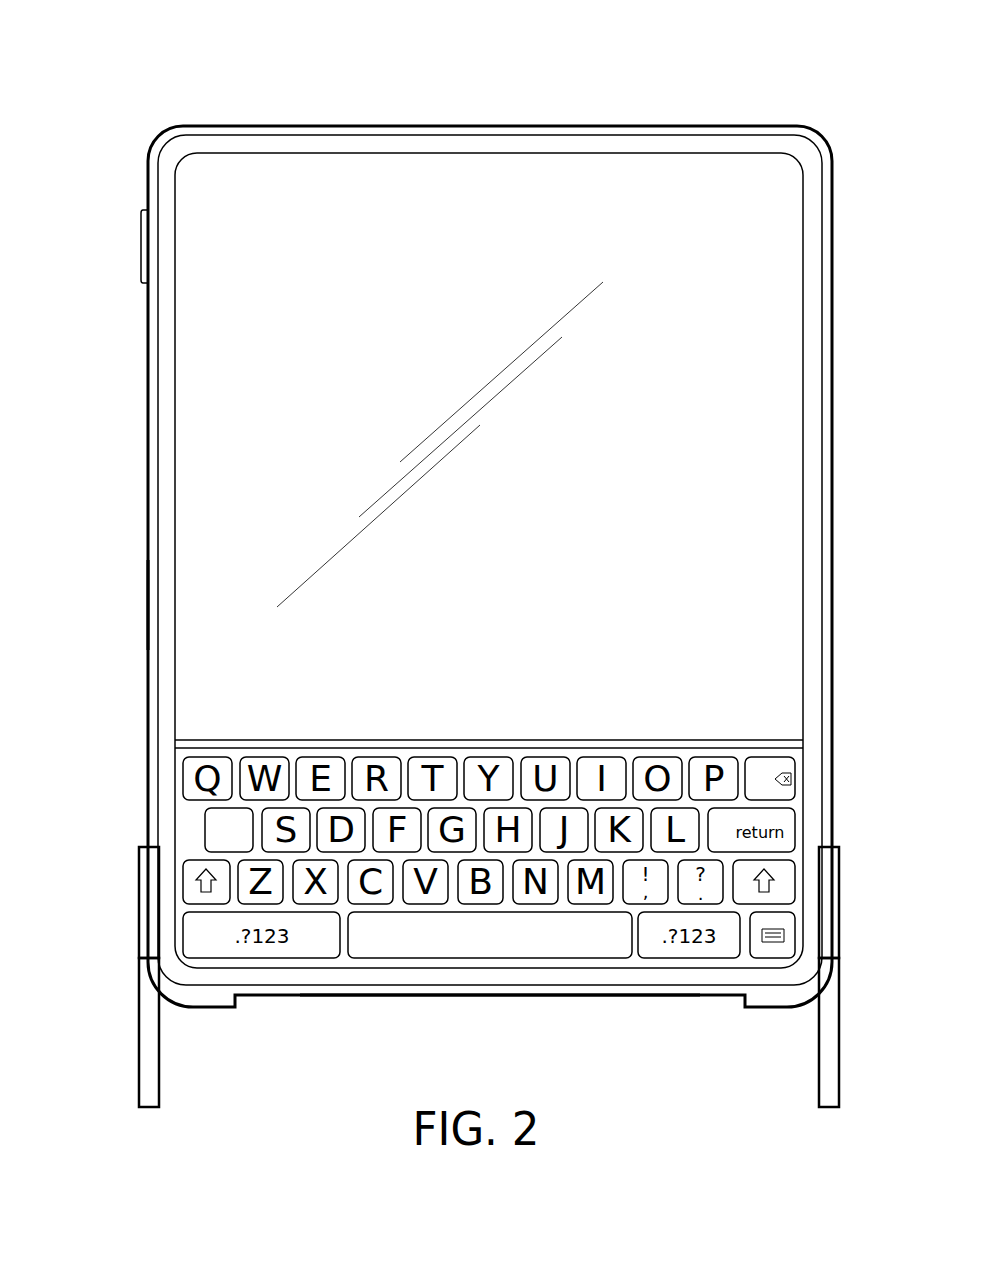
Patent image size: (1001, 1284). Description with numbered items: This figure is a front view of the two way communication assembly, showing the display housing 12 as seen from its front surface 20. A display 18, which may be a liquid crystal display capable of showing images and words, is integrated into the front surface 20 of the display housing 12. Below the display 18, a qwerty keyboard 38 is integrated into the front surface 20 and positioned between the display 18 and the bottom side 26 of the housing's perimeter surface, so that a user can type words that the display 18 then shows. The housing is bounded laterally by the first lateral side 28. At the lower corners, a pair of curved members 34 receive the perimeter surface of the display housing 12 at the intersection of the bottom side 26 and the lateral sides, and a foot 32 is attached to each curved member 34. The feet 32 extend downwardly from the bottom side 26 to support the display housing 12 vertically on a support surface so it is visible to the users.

The display housing 12 is at (183, 127).
The front surface 20 is at (297, 142).
The display 18 is at (383, 228).
The first lateral side 28 is at (148, 602).
The qwerty keyboard 38 is at (203, 828).
The bottom side 26 is at (638, 997).
The curved member 34 is at (139, 895).
The foot 32 is at (143, 1043).